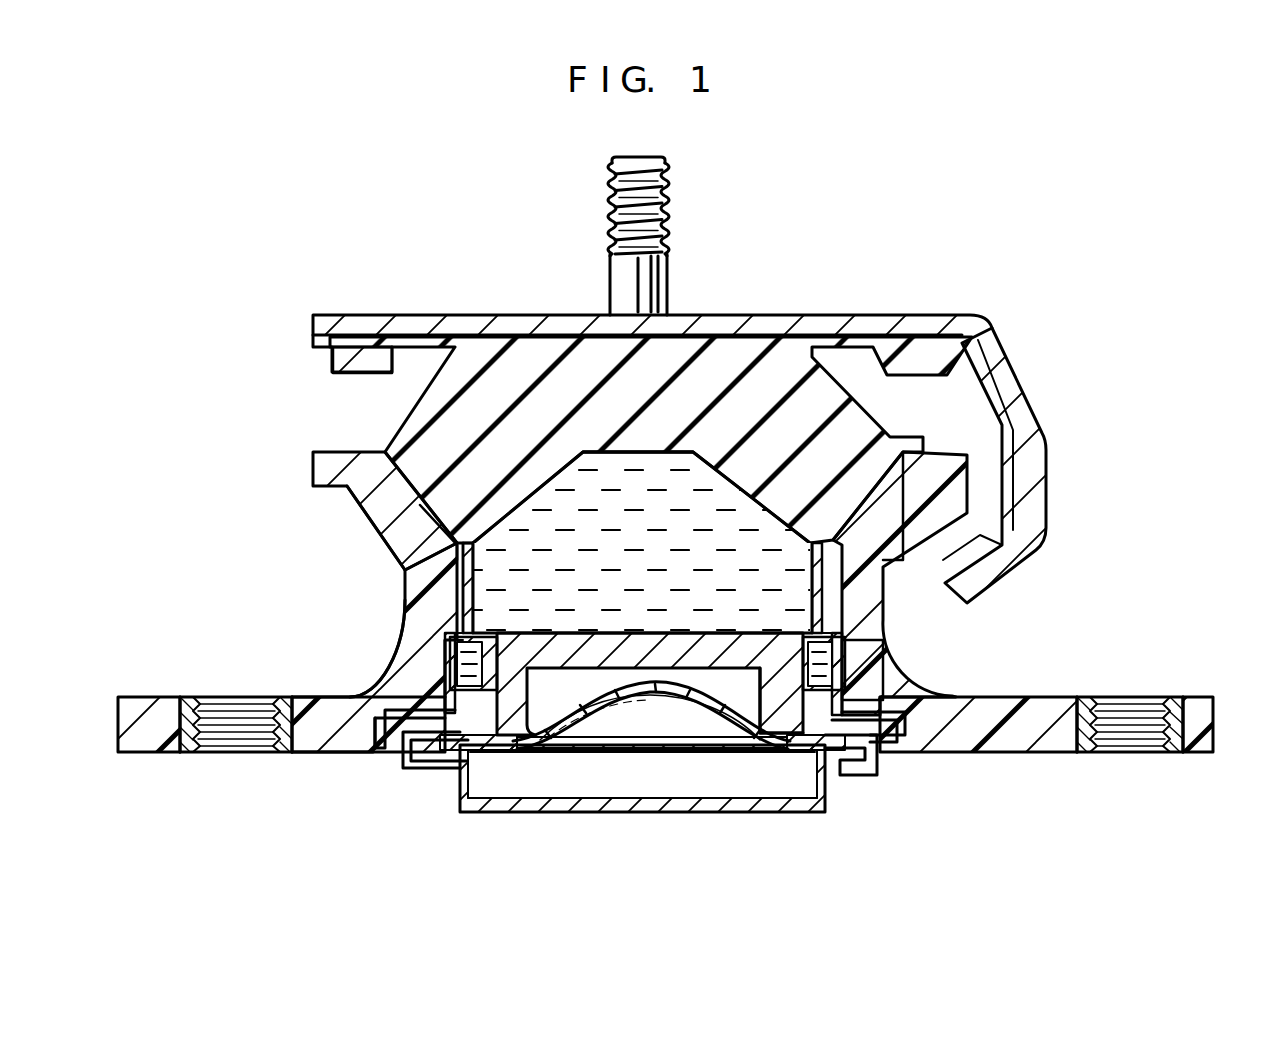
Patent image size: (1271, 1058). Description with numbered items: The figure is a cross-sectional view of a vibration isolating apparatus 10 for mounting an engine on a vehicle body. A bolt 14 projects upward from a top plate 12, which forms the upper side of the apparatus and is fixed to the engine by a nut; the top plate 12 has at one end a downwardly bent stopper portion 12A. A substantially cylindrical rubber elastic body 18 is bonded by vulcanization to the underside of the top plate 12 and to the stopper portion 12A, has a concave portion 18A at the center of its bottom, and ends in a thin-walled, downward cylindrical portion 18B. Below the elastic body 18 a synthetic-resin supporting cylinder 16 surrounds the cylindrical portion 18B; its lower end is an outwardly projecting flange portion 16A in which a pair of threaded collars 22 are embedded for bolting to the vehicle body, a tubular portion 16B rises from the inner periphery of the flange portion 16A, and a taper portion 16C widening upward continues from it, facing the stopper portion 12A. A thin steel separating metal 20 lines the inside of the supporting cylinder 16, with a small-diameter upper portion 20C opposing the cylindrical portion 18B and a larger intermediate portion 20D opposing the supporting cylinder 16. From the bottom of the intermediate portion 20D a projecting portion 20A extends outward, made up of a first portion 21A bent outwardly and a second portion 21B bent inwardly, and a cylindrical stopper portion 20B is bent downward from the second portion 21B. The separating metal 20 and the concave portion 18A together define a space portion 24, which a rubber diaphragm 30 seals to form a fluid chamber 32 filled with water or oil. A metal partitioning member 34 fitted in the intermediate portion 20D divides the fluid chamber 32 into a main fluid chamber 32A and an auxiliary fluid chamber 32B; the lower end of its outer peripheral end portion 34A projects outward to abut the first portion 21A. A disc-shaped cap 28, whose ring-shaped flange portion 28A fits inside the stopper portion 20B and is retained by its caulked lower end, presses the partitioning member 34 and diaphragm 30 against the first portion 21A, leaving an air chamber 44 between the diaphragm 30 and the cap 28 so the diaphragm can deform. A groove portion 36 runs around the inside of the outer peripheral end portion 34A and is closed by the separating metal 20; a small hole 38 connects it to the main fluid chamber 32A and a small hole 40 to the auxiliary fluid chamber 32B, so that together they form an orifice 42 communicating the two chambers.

The vibration isolating apparatus 10 is at (735, 226).
The top plate 12 is at (820, 322).
The stopper portion 12A is at (1028, 560).
The bolt 14 is at (668, 262).
The supporting cylinder 16 is at (395, 567).
The flange portion 16A is at (158, 697).
The tubular portion 16B is at (400, 603).
The taper portion 16C is at (383, 525).
The elastic body 18 is at (363, 437).
The concave portion 18A is at (755, 494).
The cylindrical portion 18B is at (407, 553).
The separating metal 20 is at (473, 548).
The projecting portion 20A is at (392, 742).
The stopper portion 20B is at (438, 740).
The upper portion 20C is at (455, 588).
The intermediate portion 20D is at (445, 678).
The first portion 21A is at (378, 738).
The second portion 21B is at (408, 760).
The collars 22 is at (282, 700).
The space portion 24 is at (800, 576).
The cap 28 is at (600, 812).
The flange portion 28A is at (845, 770).
The diaphragm 30 is at (762, 748).
The fluid chamber 32 is at (627, 615).
The main fluid chamber 32A is at (668, 550).
The auxiliary fluid chamber 32B is at (636, 787).
The partitioning member 34 is at (680, 655).
The outer peripheral end portion 34A is at (855, 690).
The groove portion 36 is at (455, 662).
The small hole 38 is at (490, 640).
The small hole 40 is at (740, 675).
The orifice 42 is at (848, 662).
The air chamber 44 is at (674, 737).